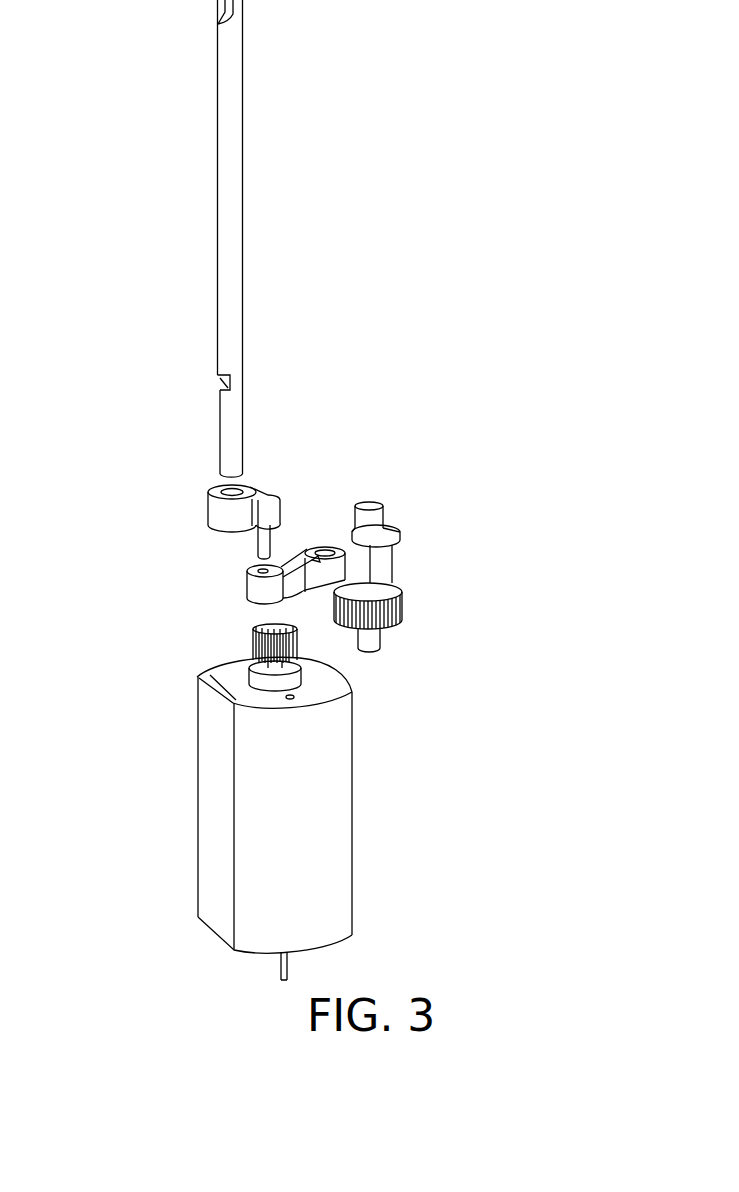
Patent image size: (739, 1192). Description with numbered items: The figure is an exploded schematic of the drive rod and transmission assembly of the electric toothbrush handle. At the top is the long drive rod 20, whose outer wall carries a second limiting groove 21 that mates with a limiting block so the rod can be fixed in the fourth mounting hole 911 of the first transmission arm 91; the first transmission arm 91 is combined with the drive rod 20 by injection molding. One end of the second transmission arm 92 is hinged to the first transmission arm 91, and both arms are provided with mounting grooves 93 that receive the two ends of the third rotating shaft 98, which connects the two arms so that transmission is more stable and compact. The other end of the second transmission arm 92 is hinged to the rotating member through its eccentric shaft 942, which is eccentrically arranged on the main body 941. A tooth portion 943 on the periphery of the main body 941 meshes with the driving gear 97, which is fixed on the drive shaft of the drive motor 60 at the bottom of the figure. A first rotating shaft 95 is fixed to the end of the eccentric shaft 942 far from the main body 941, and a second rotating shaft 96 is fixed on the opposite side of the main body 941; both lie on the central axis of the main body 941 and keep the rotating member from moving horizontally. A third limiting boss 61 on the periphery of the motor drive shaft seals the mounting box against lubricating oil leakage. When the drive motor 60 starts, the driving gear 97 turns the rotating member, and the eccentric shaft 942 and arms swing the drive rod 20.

The drive rod 20 is at (232, 135).
The second limiting groove 21 is at (225, 378).
The drive motor 60 is at (275, 827).
The third limiting boss 61 is at (275, 685).
The first transmission arm 91 is at (235, 520).
The fourth mounting hole 911 is at (232, 488).
The second transmission arm 92 is at (384, 556).
The mounting groove 93 is at (262, 568).
The first rotating shaft 95 is at (372, 503).
The second rotating shaft 96 is at (483, 660).
The driving gear 97 is at (272, 645).
The third rotating shaft 98 is at (262, 548).
The main body 941 is at (377, 598).
The eccentric shaft 942 is at (387, 567).
The tooth portion 943 is at (372, 627).